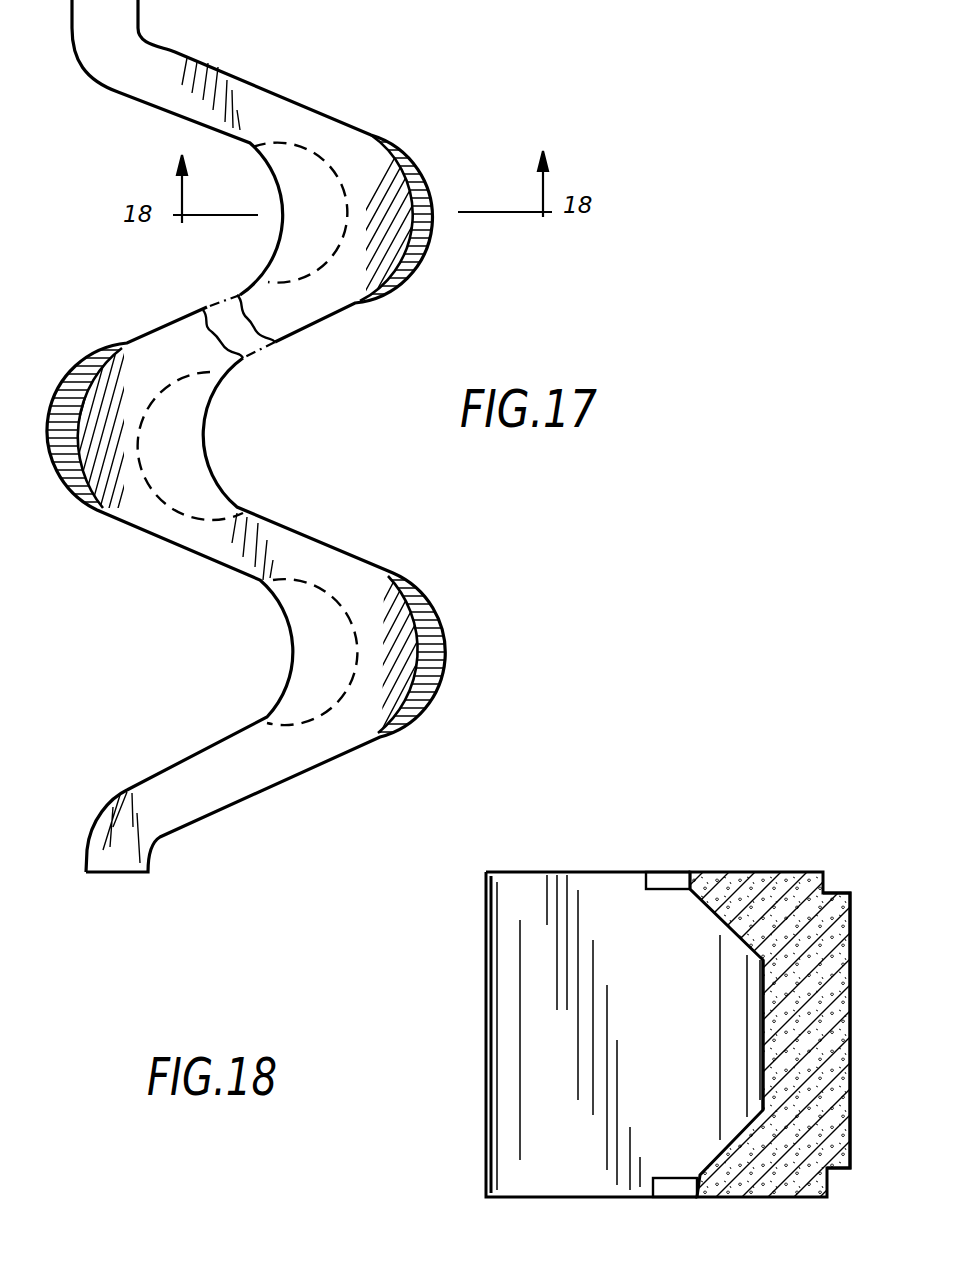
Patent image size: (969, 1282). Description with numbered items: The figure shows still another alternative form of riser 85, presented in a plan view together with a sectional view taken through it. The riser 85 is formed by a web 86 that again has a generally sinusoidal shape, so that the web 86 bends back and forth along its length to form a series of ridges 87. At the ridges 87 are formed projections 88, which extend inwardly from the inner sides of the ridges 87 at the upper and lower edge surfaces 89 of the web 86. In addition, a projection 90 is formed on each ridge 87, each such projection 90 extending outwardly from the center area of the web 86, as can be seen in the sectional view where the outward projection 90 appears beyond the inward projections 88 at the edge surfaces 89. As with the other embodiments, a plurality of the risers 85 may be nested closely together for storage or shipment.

In FIG. 17, the riser 85 is at (301, 436).
In FIG. 18, the riser 85 is at (667, 1010).
In FIG. 17, the web 86 is at (186, 314).
In FIG. 18, the web 86 is at (672, 972).
In FIG. 17, the ridges 87 is at (113, 480).
In FIG. 18, the ridges 87 is at (795, 1017).
In FIG. 17, the projections 88 is at (195, 446).
In FIG. 18, the projections 88 is at (720, 880).
In FIG. 18, the upper and lower edge surfaces 89 is at (782, 871).
In FIG. 17, the projection 90 is at (70, 398).
In FIG. 18, the projection 90 is at (848, 905).